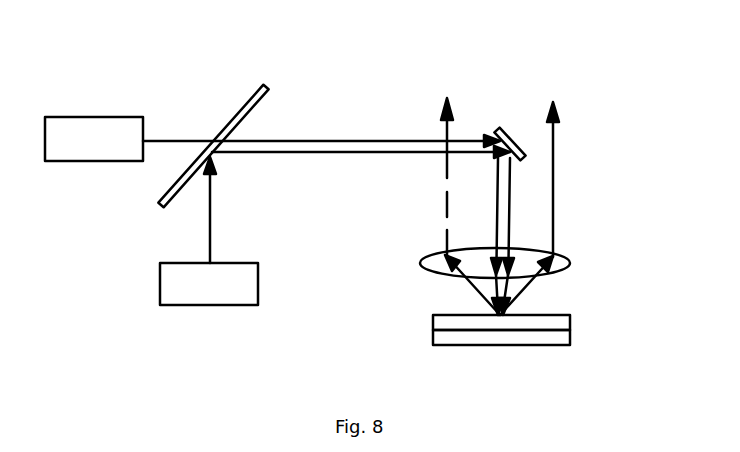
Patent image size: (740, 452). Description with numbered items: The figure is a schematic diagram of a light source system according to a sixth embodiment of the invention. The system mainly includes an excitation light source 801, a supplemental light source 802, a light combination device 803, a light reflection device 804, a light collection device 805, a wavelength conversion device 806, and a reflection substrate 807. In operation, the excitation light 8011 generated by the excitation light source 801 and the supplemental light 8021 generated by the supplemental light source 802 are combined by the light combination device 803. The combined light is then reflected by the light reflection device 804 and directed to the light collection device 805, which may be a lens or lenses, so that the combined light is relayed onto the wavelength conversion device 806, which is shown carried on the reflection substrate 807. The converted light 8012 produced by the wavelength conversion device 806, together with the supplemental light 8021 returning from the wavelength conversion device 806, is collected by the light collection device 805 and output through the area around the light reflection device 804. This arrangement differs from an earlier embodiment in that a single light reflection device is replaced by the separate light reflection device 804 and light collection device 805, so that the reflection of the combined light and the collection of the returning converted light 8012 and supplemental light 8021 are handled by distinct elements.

The excitation light source 801 is at (66, 120).
The supplemental light source 802 is at (210, 300).
The light combination device 803 is at (256, 86).
The light reflection device 804 is at (511, 135).
The light collection device 805 is at (566, 263).
The wavelength conversion device 806 is at (571, 322).
The reflection substrate 807 is at (571, 339).
The excitation light 8011 is at (162, 140).
The converted light 8012 is at (445, 203).
The supplemental light 8021 is at (208, 226).